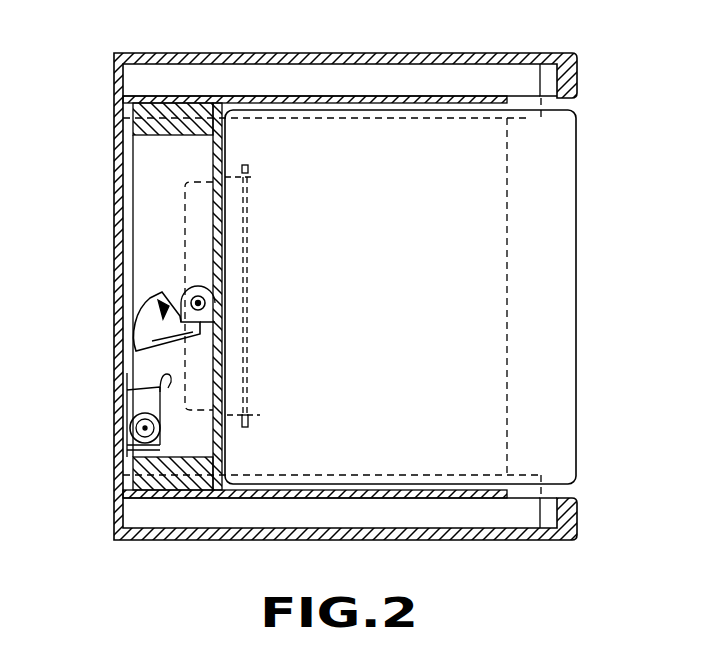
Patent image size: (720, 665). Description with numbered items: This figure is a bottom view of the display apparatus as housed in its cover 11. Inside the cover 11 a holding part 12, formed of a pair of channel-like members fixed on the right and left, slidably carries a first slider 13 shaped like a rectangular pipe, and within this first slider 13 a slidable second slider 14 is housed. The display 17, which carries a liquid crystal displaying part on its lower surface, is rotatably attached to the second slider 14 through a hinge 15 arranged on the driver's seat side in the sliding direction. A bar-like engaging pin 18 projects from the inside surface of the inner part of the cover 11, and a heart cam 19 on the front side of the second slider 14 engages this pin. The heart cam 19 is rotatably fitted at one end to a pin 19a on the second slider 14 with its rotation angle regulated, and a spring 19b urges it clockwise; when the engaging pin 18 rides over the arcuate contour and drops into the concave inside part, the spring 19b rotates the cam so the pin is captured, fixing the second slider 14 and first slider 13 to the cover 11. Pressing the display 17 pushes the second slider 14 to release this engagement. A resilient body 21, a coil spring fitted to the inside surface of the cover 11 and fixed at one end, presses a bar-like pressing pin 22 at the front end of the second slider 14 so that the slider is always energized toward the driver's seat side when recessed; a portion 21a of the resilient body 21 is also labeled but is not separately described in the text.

The cover 11 is at (368, 53).
The holding part 12 is at (150, 80).
The first slider 13 is at (267, 96).
The second slider 14 is at (150, 168).
The hinge 15 is at (250, 412).
The display 17 is at (558, 160).
The engaging pin 18 is at (157, 299).
The heart cam 19 is at (140, 314).
The pin 19a is at (203, 306).
The spring 19b is at (200, 324).
The resilient body 21 is at (128, 430).
The roller bracket 21a is at (118, 458).
The pressing pin 22 is at (127, 392).